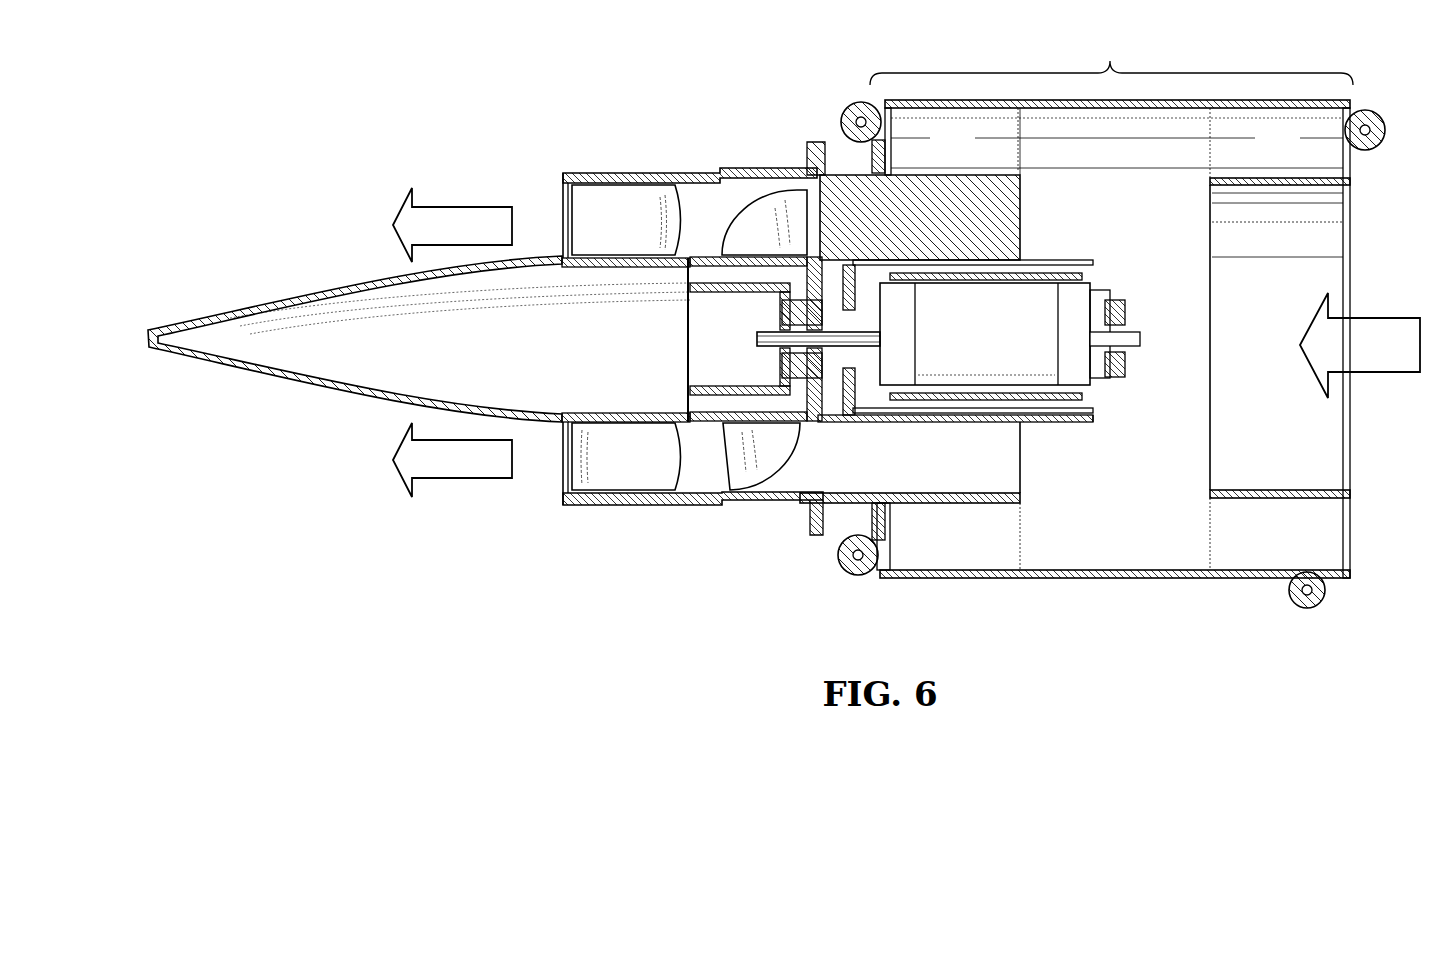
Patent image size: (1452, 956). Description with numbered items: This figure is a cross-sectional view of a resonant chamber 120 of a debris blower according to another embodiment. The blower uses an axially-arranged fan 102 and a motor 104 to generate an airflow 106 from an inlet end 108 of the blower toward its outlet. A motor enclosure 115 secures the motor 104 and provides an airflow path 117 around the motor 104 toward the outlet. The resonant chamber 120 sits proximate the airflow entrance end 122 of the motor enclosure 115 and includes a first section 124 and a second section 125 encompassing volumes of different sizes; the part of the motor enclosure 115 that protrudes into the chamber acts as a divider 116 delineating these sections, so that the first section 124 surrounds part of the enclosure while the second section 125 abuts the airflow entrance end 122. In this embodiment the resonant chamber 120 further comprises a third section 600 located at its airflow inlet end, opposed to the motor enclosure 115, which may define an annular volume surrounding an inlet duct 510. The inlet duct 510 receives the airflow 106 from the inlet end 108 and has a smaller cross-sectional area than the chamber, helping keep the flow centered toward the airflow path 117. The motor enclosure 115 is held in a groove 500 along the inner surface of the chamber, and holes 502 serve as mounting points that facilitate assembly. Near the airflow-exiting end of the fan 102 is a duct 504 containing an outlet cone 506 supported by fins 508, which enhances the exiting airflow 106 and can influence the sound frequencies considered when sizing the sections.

The fan 102 is at (760, 455).
The motor 104 is at (967, 350).
The airflow 106 is at (434, 237).
The inlet end 108 is at (1378, 443).
The motor enclosure 115 is at (840, 215).
The divider 116 is at (995, 505).
The airflow path 117 is at (855, 469).
The resonant chamber 120 is at (1118, 62).
The airflow entrance end 122 is at (1043, 455).
The first section 124 is at (935, 151).
The second section 125 is at (1120, 455).
The groove 500 is at (890, 565).
The holes 502 is at (865, 568).
The duct 504 is at (675, 505).
The outlet cone 506 is at (362, 392).
The fins 508 is at (600, 203).
The inlet duct 510 is at (1240, 355).
The third section 600 is at (1260, 151).